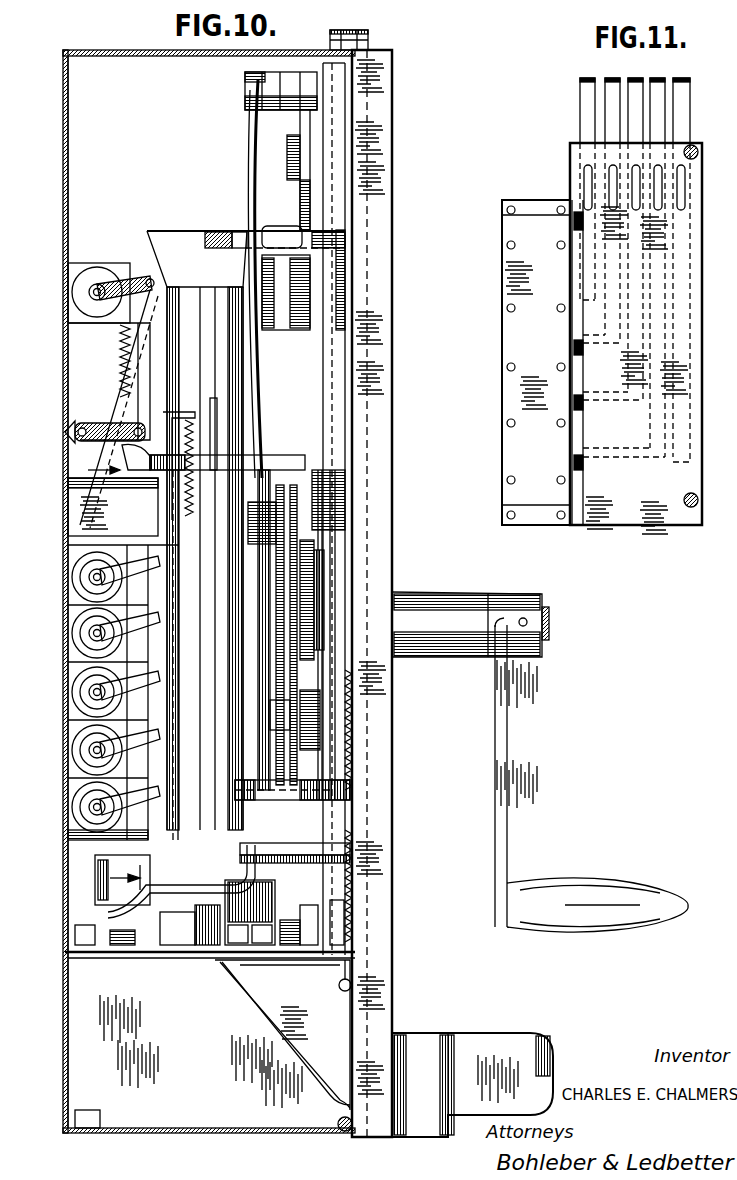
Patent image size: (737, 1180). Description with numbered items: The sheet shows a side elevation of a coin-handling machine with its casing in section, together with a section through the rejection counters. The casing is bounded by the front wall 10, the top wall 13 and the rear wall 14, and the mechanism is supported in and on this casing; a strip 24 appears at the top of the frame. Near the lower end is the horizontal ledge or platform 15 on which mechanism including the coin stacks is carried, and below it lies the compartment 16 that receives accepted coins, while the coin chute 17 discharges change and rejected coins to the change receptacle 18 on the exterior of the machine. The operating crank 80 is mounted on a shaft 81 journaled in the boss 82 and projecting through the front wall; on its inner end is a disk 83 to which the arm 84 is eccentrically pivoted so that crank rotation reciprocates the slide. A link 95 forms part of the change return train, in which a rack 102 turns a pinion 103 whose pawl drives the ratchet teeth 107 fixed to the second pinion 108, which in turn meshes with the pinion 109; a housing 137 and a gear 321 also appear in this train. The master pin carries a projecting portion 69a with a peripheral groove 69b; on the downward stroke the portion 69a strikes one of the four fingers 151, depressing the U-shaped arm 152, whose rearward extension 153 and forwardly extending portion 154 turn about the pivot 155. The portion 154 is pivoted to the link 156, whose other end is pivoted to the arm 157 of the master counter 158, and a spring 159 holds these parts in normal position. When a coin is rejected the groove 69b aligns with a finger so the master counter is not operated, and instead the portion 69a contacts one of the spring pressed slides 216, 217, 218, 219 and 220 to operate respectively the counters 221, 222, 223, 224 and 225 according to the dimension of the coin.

In FIG. 10, the front wall 10 is at (380, 458).
In FIG. 10, the top wall 13 is at (118, 50).
In FIG. 10, the rear wall 14 is at (63, 130).
In FIG. 10, the horizontal ledge or platform 15 is at (127, 954).
In FIG. 10, the compartment 16 is at (108, 1008).
In FIG. 10, the coin chute 17 is at (262, 997).
In FIG. 10, the change receptacle 18 is at (525, 1042).
In FIG. 10, the top strip 24 is at (369, 36).
In FIG. 10, the projecting portion of pin 69a is at (212, 232).
In FIG. 10, the peripheral groove 69b is at (238, 232).
In FIG. 10, the operating crank 80 is at (508, 777).
In FIG. 10, the shaft 81 is at (549, 622).
In FIG. 10, the boss 82 is at (428, 596).
In FIG. 10, the disk 83 is at (280, 578).
In FIG. 10, the arm 84 is at (262, 378).
In FIG. 10, the link 95 is at (330, 530).
In FIG. 10, the rack 102 is at (268, 800).
In FIG. 10, the pinion 103 is at (222, 846).
In FIG. 10, the teeth of circular ratchet wheel 107 is at (318, 916).
In FIG. 10, the second pinion 108 is at (250, 946).
In FIG. 10, the pinion 109 is at (208, 945).
In FIG. 10, the housing box 137 is at (92, 905).
In FIG. 10, the fingers 151 is at (218, 432).
In FIG. 10, the arm 152 is at (225, 461).
In FIG. 10, the rearward extension 153 is at (124, 458).
In FIG. 10, the forwardly extending portion 154 is at (130, 425).
In FIG. 10, the pivot 155 is at (66, 432).
In FIG. 10, the link 156 is at (135, 330).
In FIG. 10, the arm of master counter 157 is at (137, 236).
In FIG. 10, the master counter 158 is at (78, 265).
In FIG. 10, the spring 159 is at (119, 358).
In FIG. 11, the spring pressed slide 216 is at (590, 80).
In FIG. 11, the spring pressed slide 217 is at (614, 82).
In FIG. 11, the spring pressed slide 218 is at (637, 82).
In FIG. 11, the spring pressed slide 219 is at (660, 82).
In FIG. 11, the spring pressed slide 220 is at (690, 82).
In FIG. 10, the counter 221 is at (74, 577).
In FIG. 10, the counter 222 is at (74, 633).
In FIG. 10, the counter 223 is at (74, 692).
In FIG. 10, the counter 224 is at (74, 750).
In FIG. 10, the counter 225 is at (74, 807).
In FIG. 10, the gear 321 is at (295, 636).